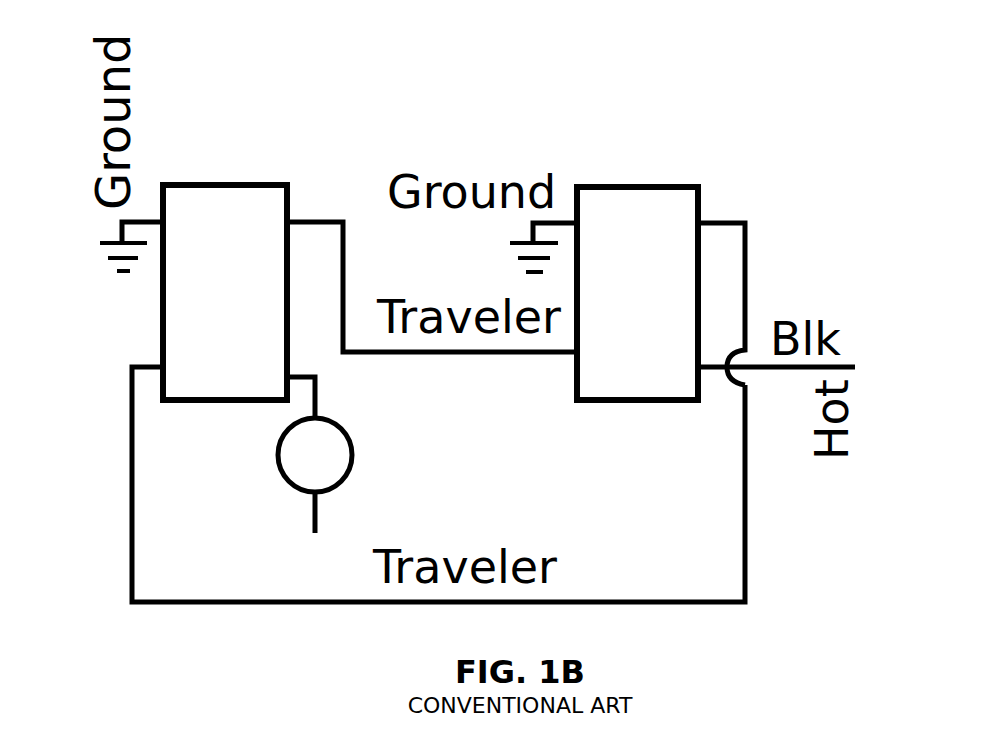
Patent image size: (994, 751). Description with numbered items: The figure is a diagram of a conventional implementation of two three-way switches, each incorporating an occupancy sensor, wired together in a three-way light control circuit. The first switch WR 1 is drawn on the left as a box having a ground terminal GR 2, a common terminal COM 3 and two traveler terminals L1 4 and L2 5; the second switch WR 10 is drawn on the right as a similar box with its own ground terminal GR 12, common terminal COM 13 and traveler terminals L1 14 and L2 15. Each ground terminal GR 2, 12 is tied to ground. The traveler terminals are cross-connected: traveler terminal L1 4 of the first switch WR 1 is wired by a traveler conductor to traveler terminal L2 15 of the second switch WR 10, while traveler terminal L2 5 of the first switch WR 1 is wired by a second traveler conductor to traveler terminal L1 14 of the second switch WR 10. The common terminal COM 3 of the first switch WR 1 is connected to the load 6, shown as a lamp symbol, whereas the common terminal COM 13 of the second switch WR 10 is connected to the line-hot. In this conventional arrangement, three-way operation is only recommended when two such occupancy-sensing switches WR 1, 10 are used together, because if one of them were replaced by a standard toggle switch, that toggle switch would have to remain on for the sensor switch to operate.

The switch WR 1 is at (213, 108).
The ground terminal GR 2 is at (163, 226).
The common terminal COM 3 is at (288, 373).
The traveler terminal L1 4 is at (290, 218).
The traveler terminal L2 5 is at (127, 287).
The load 6 is at (343, 414).
The switch WR 10 is at (685, 152).
The ground terminal GR 12 is at (577, 212).
The common terminal COM 13 is at (700, 372).
The traveler terminal L1 14 is at (700, 218).
The traveler terminal L2 15 is at (577, 375).